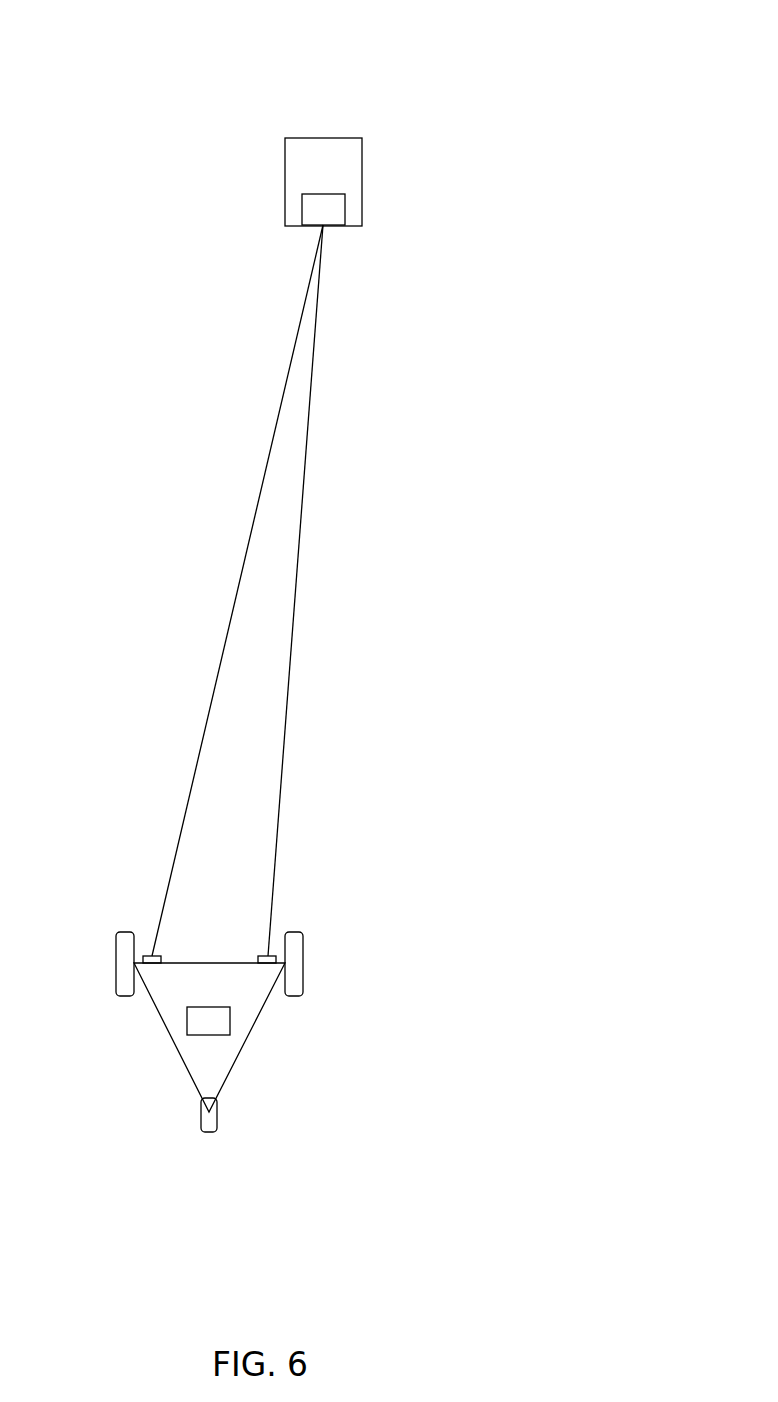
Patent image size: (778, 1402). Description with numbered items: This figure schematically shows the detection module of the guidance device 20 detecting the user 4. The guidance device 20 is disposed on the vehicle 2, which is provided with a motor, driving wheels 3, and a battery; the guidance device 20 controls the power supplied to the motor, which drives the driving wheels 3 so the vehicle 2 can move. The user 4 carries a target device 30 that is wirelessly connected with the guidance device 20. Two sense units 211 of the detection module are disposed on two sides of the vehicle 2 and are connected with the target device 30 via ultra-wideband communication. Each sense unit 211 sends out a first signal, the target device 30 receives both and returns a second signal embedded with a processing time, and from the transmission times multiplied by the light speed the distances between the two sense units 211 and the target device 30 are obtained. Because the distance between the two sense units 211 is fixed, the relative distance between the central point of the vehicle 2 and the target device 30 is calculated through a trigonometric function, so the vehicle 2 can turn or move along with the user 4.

The vehicle 2 is at (282, 1046).
The driving wheels 3 is at (120, 962).
The user 4 is at (335, 148).
The guidance device 20 is at (223, 1022).
The target device 30 is at (335, 212).
The sense units 211 is at (148, 955).